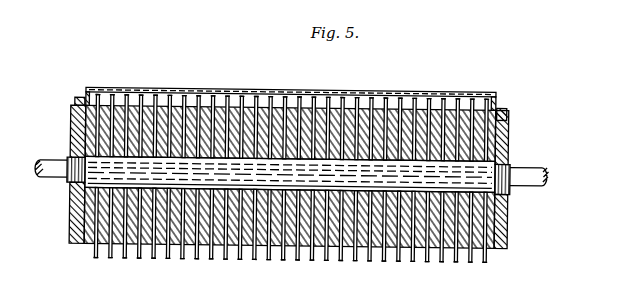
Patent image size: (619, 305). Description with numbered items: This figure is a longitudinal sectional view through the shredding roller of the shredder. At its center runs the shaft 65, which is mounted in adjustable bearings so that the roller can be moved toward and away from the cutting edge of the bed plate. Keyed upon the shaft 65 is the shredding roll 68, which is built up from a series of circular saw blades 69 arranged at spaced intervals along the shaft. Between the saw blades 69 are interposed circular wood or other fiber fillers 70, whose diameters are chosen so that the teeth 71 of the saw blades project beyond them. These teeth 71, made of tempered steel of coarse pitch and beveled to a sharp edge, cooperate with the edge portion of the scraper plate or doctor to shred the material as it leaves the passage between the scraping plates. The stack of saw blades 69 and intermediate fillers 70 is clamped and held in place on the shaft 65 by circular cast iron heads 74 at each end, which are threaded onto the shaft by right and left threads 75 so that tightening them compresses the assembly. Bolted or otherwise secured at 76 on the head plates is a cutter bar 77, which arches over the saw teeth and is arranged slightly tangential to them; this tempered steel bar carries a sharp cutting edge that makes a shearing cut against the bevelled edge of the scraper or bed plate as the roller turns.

The shaft 65 is at (500, 193).
The shredding roll 68 is at (350, 109).
The saw blades 69 is at (407, 109).
The fillers 70 is at (394, 107).
The teeth 71 is at (257, 100).
The heads 74 is at (69, 115).
The right and left threads 75 is at (62, 153).
The bolt fastening 76 is at (78, 103).
The cutter bar 77 is at (461, 95).